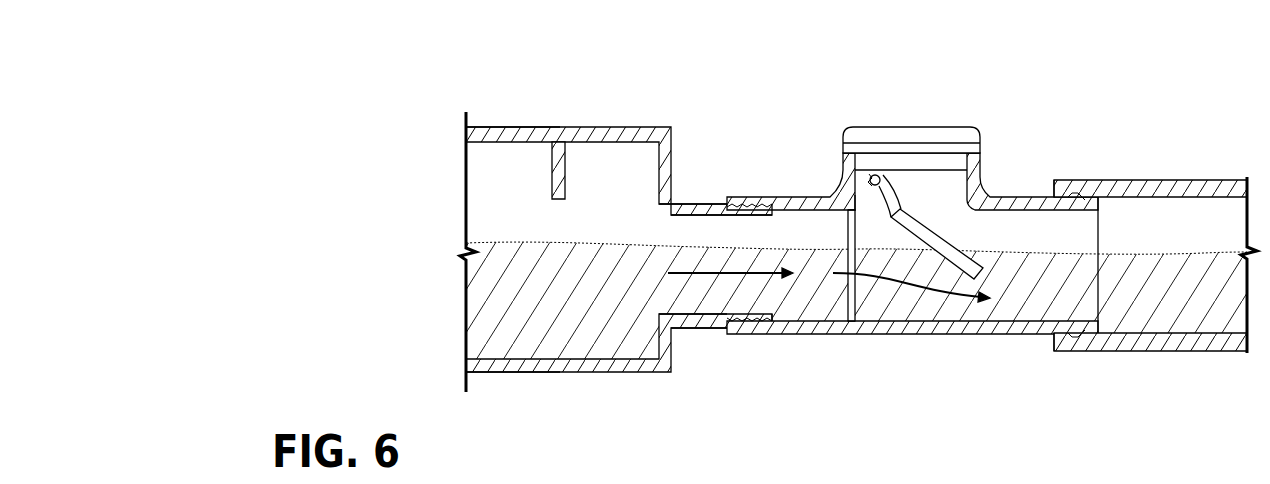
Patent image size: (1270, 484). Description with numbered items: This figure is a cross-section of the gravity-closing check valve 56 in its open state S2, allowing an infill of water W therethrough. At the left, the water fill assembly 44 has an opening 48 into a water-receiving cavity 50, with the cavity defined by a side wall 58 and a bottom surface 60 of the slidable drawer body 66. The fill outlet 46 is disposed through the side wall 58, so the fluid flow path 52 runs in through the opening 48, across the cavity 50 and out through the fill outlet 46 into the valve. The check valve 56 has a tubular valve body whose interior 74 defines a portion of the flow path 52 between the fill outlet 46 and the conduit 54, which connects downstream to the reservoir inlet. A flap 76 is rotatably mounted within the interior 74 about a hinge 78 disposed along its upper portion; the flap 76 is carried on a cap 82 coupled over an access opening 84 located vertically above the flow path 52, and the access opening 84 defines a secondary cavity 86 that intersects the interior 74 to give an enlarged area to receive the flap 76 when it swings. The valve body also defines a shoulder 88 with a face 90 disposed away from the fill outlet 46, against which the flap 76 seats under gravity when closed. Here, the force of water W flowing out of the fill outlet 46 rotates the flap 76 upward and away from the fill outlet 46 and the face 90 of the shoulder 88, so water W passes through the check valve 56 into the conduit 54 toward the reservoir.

The water fill assembly 44 is at (618, 105).
The fill outlet 46 is at (732, 196).
The opening 48 is at (494, 116).
The water-receiving cavity 50 is at (856, 300).
The fluid flow path 52 is at (888, 280).
The conduit 54 is at (1156, 180).
The gravity-closing check valve 56 is at (1045, 171).
The side wall 58 is at (673, 178).
The bottom surface 60 is at (594, 374).
The drawer body 66 is at (507, 386).
The interior 74 is at (1032, 243).
The flap 76 is at (978, 253).
The hinge 78 is at (888, 175).
The cap 82 is at (907, 140).
The access opening 84 is at (844, 154).
The secondary cavity 86 is at (857, 200).
The shoulder 88 is at (841, 234).
The face 90 is at (856, 316).
The open state S2 is at (957, 229).
The water W is at (1168, 305).